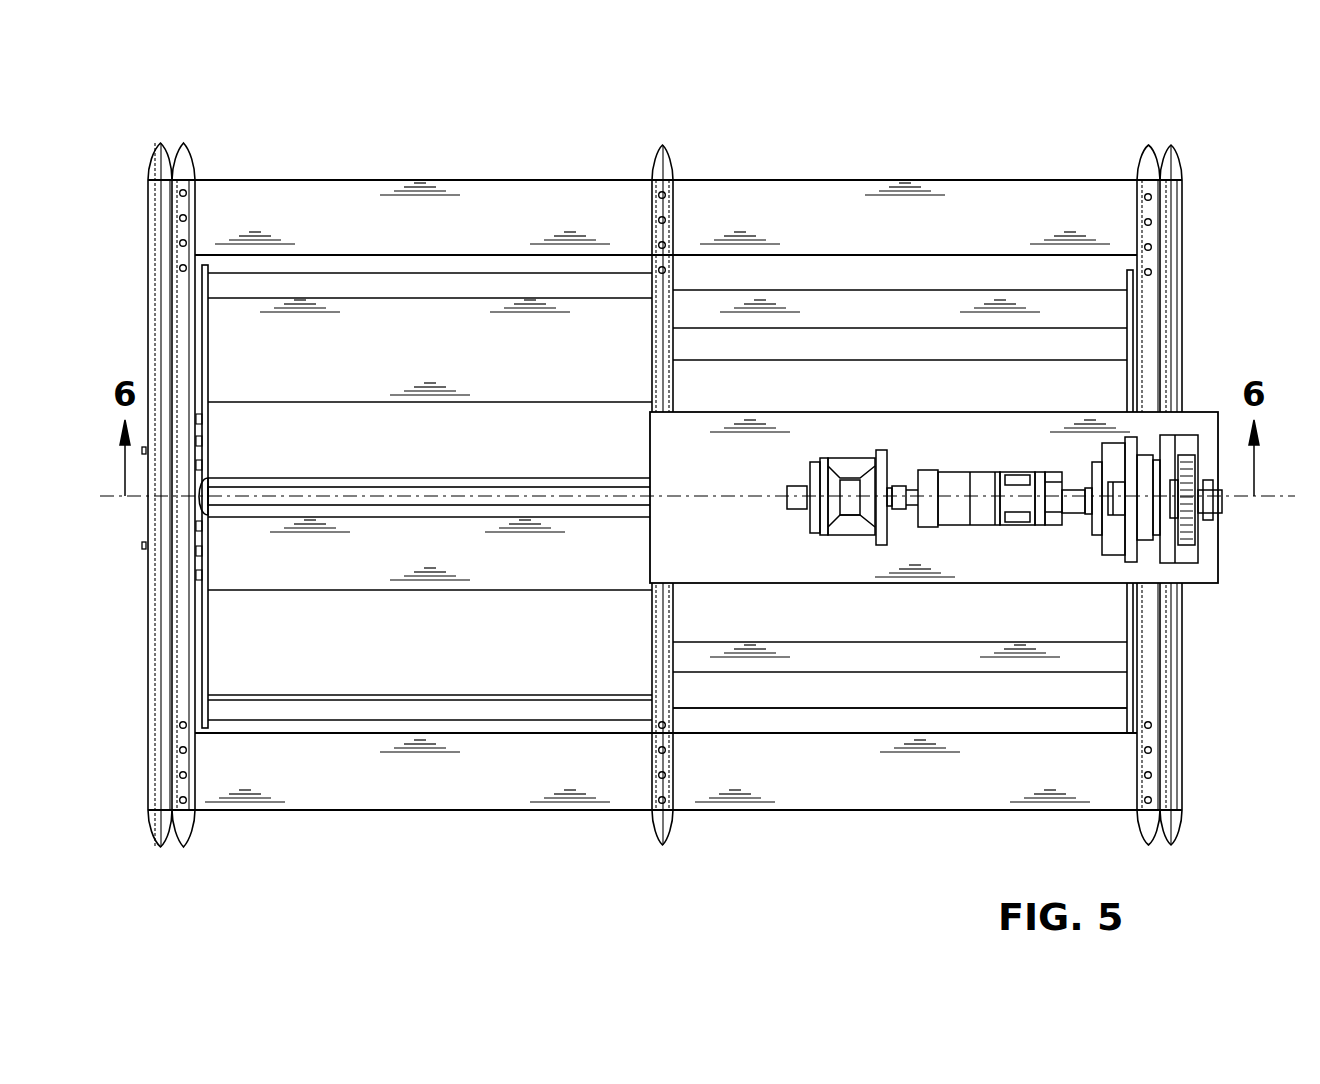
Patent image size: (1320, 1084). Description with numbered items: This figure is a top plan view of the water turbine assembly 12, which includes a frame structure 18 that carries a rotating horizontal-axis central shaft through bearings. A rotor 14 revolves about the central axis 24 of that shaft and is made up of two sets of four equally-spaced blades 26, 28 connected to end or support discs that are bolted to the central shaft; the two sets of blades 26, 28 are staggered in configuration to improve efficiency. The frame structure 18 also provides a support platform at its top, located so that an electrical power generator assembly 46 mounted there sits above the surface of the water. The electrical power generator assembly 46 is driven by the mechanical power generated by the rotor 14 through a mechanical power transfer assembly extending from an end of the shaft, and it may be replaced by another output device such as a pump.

The water turbine assembly 12 is at (290, 122).
The rotor 14 is at (509, 262).
The frame structure 18 is at (830, 168).
The central axis 24 is at (1272, 497).
The blades 26 is at (337, 722).
The blades 28 is at (820, 708).
The electrical power generator assembly 46 is at (966, 455).